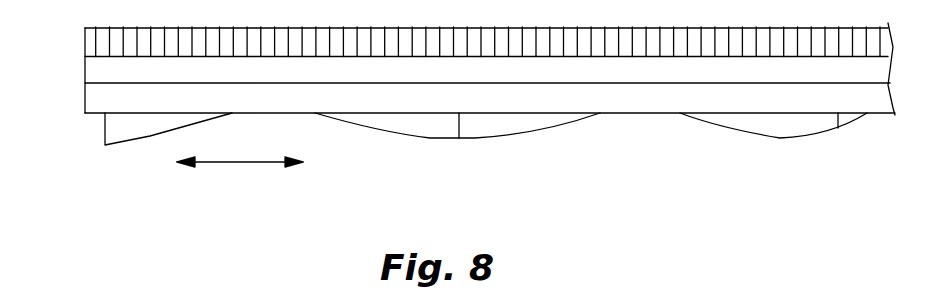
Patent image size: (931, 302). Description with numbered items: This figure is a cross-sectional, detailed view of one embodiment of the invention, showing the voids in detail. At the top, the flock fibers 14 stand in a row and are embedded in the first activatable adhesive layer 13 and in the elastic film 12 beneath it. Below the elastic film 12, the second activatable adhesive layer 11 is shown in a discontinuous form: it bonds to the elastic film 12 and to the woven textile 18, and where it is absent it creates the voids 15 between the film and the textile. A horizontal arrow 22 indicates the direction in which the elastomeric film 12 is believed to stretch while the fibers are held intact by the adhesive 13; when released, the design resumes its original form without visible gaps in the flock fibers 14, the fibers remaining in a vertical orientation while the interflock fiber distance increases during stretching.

The second activatable adhesive layer 11 is at (105, 132).
The elastic film 12 is at (85, 97).
The first activatable adhesive layer 13 is at (85, 72).
The flock fibers 14 is at (84, 41).
The voids 15 is at (401, 120).
The woven textile 18 is at (439, 222).
The width dimension 22 is at (230, 163).